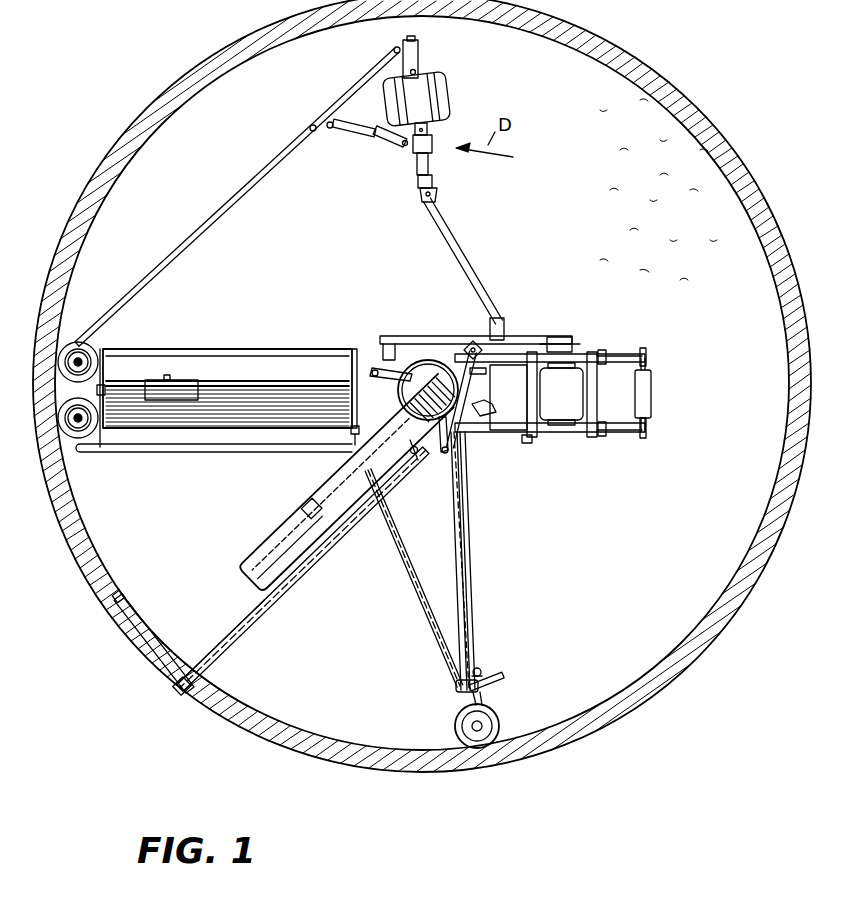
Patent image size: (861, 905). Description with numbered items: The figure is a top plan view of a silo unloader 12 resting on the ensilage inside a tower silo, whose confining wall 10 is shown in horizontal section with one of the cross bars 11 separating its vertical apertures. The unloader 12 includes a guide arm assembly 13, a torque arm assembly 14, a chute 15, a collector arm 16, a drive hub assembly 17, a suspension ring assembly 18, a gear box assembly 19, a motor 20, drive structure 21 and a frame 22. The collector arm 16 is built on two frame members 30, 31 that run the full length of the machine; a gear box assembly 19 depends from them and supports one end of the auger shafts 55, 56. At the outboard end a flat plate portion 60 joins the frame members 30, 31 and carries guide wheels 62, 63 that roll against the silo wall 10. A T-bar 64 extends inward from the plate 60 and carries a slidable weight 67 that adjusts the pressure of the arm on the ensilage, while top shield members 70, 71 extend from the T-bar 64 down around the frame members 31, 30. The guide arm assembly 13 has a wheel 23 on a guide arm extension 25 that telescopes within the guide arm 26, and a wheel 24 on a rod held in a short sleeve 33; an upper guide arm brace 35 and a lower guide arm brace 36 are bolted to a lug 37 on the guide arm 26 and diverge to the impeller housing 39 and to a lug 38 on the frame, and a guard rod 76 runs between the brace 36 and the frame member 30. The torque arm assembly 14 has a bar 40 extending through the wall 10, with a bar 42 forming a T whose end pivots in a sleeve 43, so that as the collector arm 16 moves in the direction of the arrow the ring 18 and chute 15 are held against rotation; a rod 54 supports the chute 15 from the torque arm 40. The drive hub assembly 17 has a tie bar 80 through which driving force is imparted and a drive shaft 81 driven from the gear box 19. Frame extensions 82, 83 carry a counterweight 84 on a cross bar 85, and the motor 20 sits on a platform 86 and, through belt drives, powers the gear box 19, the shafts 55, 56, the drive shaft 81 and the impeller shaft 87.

The confining wall 10 is at (662, 690).
The cross bar 11 is at (160, 632).
The silo unloader 12 is at (340, 334).
The guide arm assembly 13 is at (477, 573).
The torque arm assembly 14 is at (340, 545).
The chute 15 is at (298, 480).
The collector arm 16 is at (252, 347).
The drive hub assembly 17 is at (461, 91).
The suspension ring assembly 18 is at (422, 365).
The gear box assembly 19 is at (515, 381).
The motor 20 is at (567, 400).
The drive structure 21 is at (568, 336).
The frame 22 is at (623, 346).
The wheel 23 is at (498, 724).
The wheel 24 is at (501, 676).
The guide arm extension 25 is at (471, 700).
The guide arm 26 is at (473, 615).
The frame member 30 is at (610, 434).
The frame member 31 is at (606, 354).
The short sleeve 33 is at (479, 669).
The upper guide arm brace 35 is at (463, 508).
The lower guide arm brace 36 is at (404, 546).
The lug 37 is at (456, 687).
The lug 38 is at (352, 432).
The impeller housing 39 is at (368, 374).
The torque arm bar 40 is at (236, 636).
The bar 42 is at (413, 455).
The sleeve 43 is at (440, 456).
The rod 54 is at (300, 512).
The shaft 55 is at (482, 374).
The shaft 56 is at (498, 410).
The flat horizontal plate portion 60 is at (112, 356).
The guide wheel 62 is at (86, 440).
The guide wheel 63 is at (78, 342).
The T-bar 64 is at (280, 381).
The weight 67 is at (182, 380).
The top shield member 70 is at (214, 360).
The top shield member 71 is at (266, 430).
The guard rod 76 is at (183, 453).
The tie bar 80 is at (222, 212).
The drive shaft 81 is at (468, 262).
The frame extension 82 is at (638, 356).
The frame extension 83 is at (643, 434).
The counterweight 84 is at (652, 392).
The cross bar 85 is at (646, 363).
The platform 86 is at (525, 444).
The shaft 87 is at (382, 356).